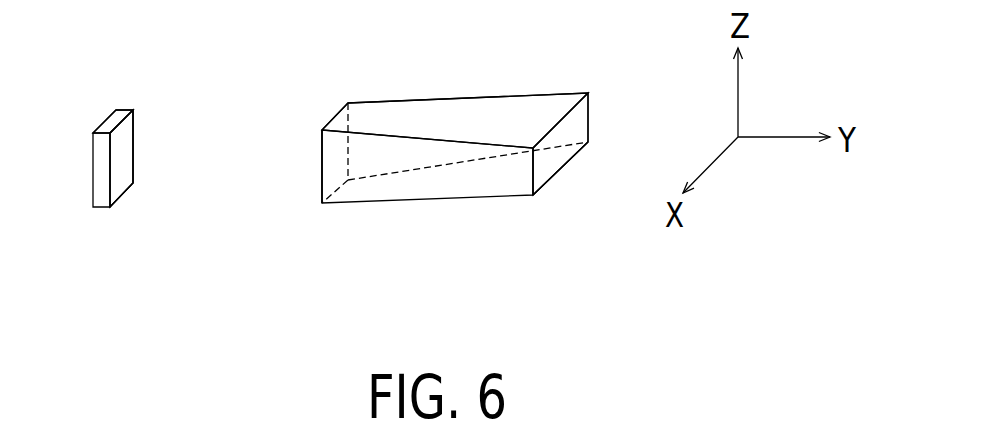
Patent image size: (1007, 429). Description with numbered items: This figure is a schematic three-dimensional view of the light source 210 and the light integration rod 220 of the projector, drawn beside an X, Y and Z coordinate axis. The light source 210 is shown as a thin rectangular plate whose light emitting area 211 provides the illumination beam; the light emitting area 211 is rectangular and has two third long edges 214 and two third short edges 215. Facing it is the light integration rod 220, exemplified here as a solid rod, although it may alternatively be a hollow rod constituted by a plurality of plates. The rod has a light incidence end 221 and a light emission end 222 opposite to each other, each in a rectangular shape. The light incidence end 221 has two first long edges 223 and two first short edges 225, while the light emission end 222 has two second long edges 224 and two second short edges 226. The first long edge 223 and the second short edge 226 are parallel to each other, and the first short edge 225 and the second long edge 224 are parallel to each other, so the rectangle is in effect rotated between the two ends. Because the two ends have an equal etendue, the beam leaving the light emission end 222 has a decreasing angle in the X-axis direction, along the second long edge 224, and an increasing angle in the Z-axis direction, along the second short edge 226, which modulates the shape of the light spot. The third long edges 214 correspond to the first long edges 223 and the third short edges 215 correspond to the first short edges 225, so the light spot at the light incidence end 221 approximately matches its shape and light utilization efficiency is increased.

The light source 210 is at (100, 204).
The light emitting area 211 is at (133, 170).
The third long edge 214 is at (135, 142).
The third short edge 215 is at (120, 118).
The light integration rod 220 is at (390, 197).
The light incidence end 221 is at (316, 149).
The light emission end 222 is at (582, 115).
The first long edge 223 is at (320, 167).
The second long edge 224 is at (558, 172).
The first short edge 225 is at (348, 107).
The second short edge 226 is at (532, 172).